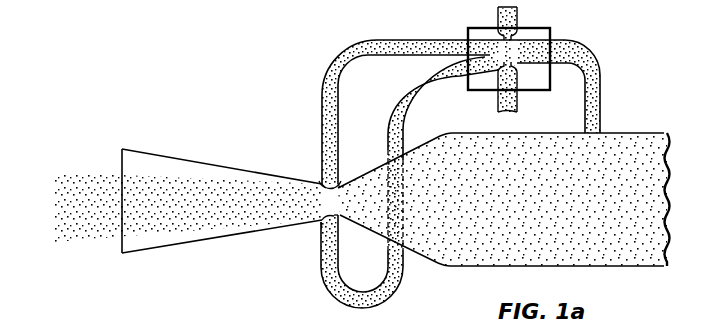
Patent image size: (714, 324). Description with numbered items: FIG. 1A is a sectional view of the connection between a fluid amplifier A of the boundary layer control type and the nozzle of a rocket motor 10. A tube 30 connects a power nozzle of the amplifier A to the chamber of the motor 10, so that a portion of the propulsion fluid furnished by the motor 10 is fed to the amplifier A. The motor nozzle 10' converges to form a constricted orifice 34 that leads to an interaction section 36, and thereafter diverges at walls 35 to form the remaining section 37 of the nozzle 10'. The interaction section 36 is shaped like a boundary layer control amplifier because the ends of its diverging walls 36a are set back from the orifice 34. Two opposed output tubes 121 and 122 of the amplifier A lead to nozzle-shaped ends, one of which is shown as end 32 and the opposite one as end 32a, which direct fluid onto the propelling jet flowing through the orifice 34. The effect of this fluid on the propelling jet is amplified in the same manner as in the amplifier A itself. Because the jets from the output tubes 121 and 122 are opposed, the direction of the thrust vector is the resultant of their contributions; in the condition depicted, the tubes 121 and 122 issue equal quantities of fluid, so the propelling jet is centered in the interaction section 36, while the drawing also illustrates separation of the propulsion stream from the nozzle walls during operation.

The rocket motor 10 is at (504, 186).
The motor nozzle 10' is at (422, 200).
The tube 30 is at (592, 104).
The amplifier A is at (549, 38).
The output tube 121 is at (322, 112).
The output tube 122 is at (387, 288).
The remaining section of the nozzle 37 is at (192, 161).
The diverging walls 35 is at (240, 173).
The diverging walls 36a is at (322, 190).
The interaction section 36 is at (325, 205).
The nozzle-shaped end 32 is at (338, 184).
The lower outlet 32a is at (322, 256).
The constricted orifice 34 is at (337, 216).